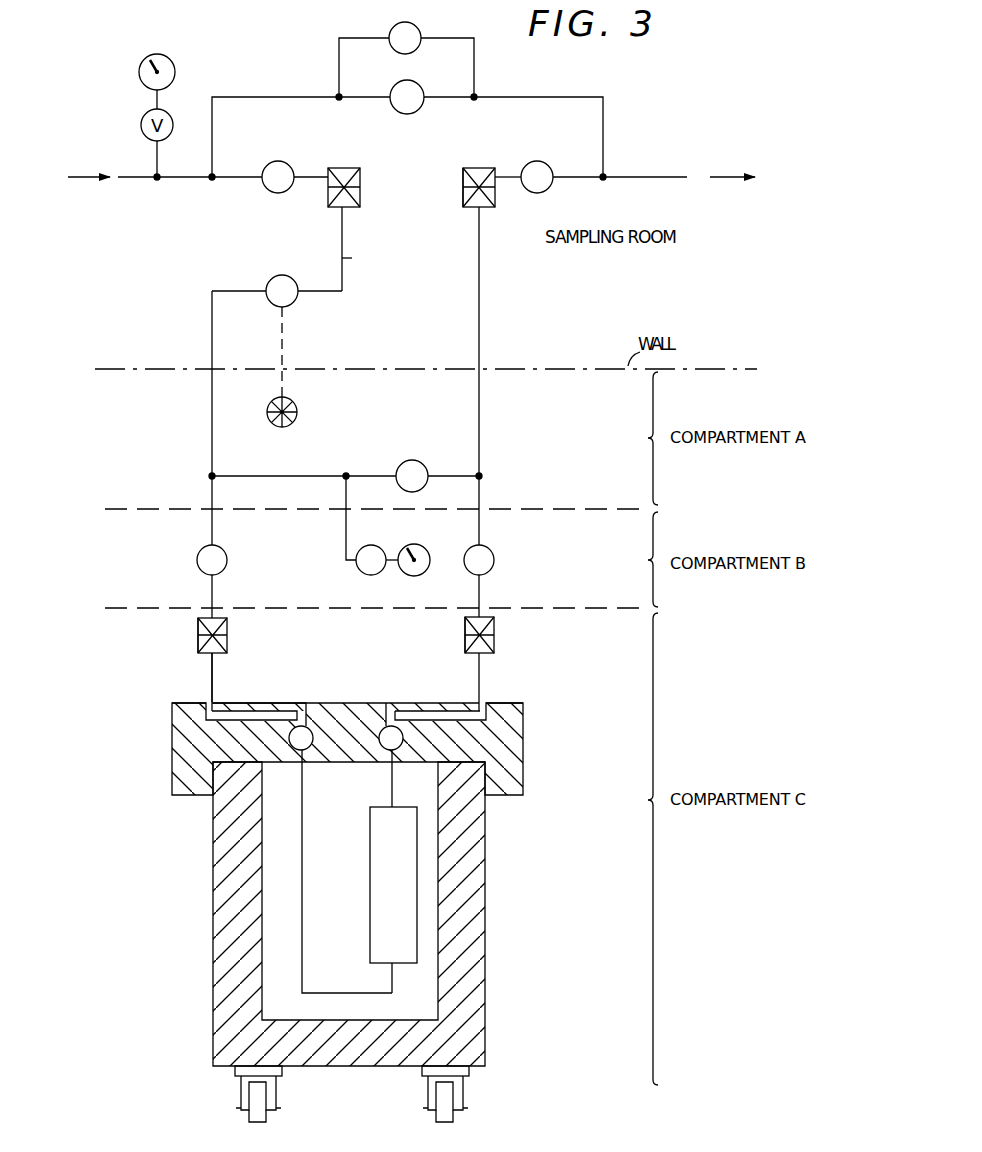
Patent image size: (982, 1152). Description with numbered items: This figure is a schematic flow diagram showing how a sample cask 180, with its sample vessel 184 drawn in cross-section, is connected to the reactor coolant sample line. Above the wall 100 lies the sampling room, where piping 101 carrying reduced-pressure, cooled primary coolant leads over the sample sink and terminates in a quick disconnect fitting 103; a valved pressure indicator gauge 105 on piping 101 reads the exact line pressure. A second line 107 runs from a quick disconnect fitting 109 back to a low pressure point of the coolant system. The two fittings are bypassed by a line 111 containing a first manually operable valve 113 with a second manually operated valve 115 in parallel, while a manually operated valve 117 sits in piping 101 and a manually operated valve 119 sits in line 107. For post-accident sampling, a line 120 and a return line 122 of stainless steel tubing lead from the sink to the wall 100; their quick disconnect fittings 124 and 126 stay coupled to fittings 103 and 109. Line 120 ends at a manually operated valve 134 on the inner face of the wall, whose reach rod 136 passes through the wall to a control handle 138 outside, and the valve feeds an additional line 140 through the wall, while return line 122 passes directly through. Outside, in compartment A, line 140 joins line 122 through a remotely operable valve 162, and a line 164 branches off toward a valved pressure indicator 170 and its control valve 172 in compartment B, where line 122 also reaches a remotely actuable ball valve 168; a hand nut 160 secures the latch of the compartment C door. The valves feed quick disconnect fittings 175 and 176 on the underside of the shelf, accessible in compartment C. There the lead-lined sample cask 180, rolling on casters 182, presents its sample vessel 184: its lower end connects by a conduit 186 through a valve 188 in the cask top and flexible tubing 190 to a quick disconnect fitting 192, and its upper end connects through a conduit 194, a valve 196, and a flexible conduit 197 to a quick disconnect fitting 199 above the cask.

The wall 100 is at (381, 368).
The piping 101 is at (145, 182).
The quick disconnect fitting 103 is at (335, 168).
The valved pressure indicator gauge 105 is at (175, 72).
The second line 107 is at (655, 175).
The quick disconnect fitting 109 is at (484, 168).
The bypass line 111 is at (293, 93).
The first manually operable valve 113 is at (400, 114).
The second manually operated valve 115 is at (418, 20).
The manually operated valve 117 is at (288, 152).
The manually operated valve 119 is at (545, 162).
The line 120 is at (360, 271).
The return line 122 is at (486, 303).
The quick disconnect fitting 124 is at (360, 210).
The quick disconnect fitting 126 is at (462, 198).
The manually operated valve 134 is at (289, 276).
The reach rod 136 is at (286, 345).
The control handle 138 is at (297, 416).
The additional line 140 is at (212, 322).
The hand nut 160 is at (462, 480).
The remotely operable valve 162 is at (398, 464).
The line 164 is at (346, 490).
The remotely actuable ball valve 168 is at (495, 562).
The valved pressure indicator 170 is at (436, 535).
The control valve 172 is at (368, 577).
The quick disconnect fitting 175 is at (228, 630).
The quick disconnect fitting 176 is at (464, 628).
The sample cask 180 is at (213, 915).
The casters 182 is at (258, 1114).
The sample vessel 184 is at (404, 900).
The conduit 186 is at (303, 815).
The valve 188 is at (306, 728).
The flexible tubing 190 is at (214, 695).
The quick disconnect fitting 192 is at (197, 645).
The conduit 194 is at (391, 785).
The valve 196 is at (386, 728).
The flexible conduit 197 is at (481, 692).
The quick disconnect fitting 199 is at (496, 646).